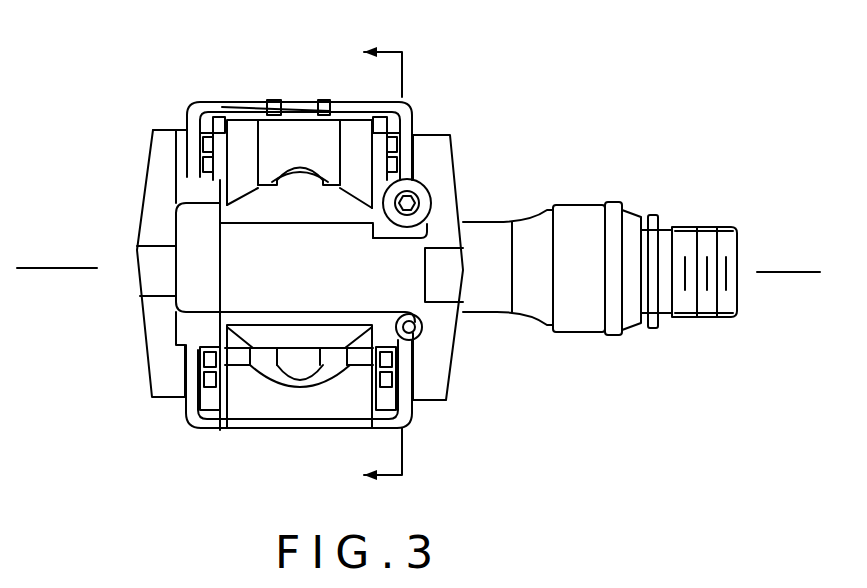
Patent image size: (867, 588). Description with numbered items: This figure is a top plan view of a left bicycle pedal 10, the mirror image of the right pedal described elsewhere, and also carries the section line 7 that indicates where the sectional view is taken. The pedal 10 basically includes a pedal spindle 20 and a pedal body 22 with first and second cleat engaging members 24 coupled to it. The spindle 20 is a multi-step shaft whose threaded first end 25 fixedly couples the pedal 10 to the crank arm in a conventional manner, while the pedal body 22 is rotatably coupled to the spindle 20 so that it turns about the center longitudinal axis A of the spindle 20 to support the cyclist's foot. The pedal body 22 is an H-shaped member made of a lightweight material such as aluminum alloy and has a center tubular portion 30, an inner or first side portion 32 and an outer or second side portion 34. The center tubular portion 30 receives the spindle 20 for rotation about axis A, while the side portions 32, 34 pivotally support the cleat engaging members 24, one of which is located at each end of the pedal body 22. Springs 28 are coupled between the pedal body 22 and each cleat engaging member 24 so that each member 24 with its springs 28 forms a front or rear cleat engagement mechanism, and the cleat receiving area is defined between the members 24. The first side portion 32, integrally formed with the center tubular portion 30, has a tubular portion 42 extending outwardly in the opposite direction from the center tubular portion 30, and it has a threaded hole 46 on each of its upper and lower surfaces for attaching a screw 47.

The bicycle pedal 10 is at (507, 100).
The pedal spindle 20 is at (652, 210).
The pedal body 22 is at (142, 180).
The cleat engaging member 24 is at (230, 100).
The first end of spindle 25 is at (705, 228).
The spring 28 is at (320, 350).
The center tubular portion 30 is at (268, 220).
The first side portion 32 is at (453, 375).
The second side portion 34 is at (143, 333).
The tubular portion 42 is at (502, 221).
The threaded hole 46 is at (423, 322).
The screw 47 is at (428, 186).
The section line 7- 7 is at (372, 263).
The center longitudinal axis A is at (782, 272).